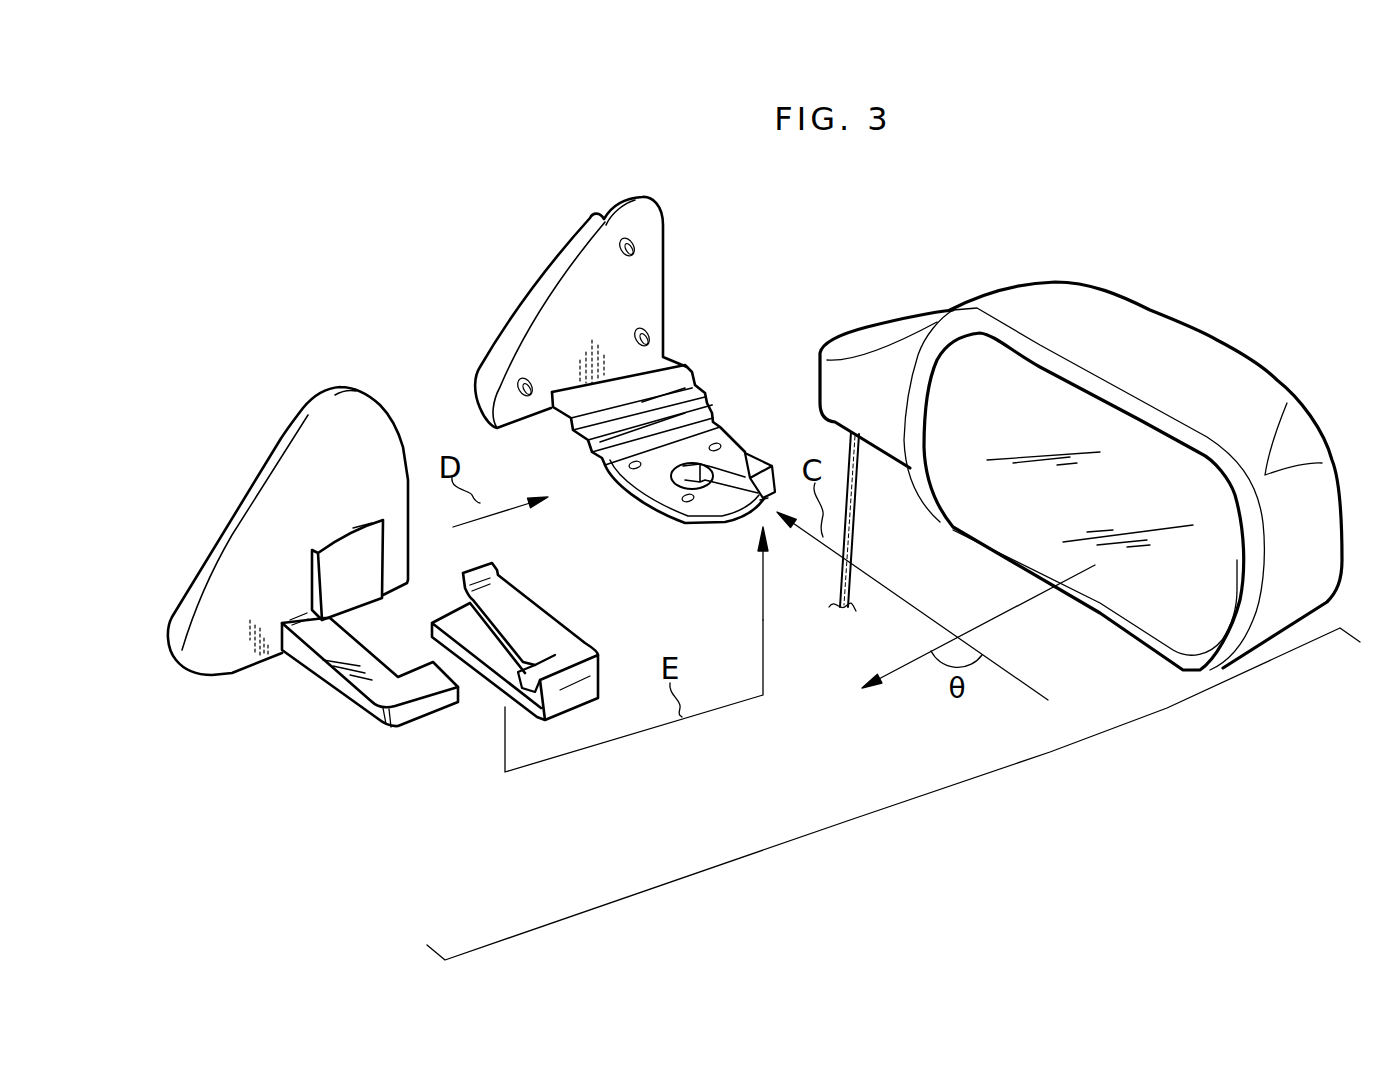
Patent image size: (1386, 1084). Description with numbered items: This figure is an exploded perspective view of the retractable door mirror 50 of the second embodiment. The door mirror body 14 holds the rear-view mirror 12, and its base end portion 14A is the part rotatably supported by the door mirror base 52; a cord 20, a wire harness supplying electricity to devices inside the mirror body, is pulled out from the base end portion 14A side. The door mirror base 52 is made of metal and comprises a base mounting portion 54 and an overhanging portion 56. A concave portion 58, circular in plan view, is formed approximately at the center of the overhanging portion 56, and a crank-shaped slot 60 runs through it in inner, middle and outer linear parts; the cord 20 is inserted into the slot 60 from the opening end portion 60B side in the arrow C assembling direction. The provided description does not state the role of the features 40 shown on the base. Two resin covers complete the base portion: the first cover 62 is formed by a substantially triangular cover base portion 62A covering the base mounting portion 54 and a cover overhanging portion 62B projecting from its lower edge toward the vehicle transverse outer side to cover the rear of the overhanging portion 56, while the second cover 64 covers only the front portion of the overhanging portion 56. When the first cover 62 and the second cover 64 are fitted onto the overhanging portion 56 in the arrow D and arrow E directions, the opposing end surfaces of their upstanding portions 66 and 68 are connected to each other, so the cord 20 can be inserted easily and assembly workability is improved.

The rear-view mirror 12 is at (1097, 590).
The door mirror body 14 is at (1168, 305).
The base end portion 14A is at (867, 343).
The cord 20 is at (852, 558).
The mounting holes 40 is at (717, 445).
The retractable door mirror 50 is at (1008, 246).
The door mirror base 52 is at (720, 265).
The base mounting portion 54 is at (663, 337).
The overhanging portion 56 is at (700, 390).
The concave portion 58 is at (683, 487).
The crank-shaped slot 60 is at (753, 460).
The opening end portion 60B is at (765, 503).
The first cover 62 is at (272, 782).
The cover base portion 62A is at (242, 643).
The cover overhanging portion 62B is at (367, 713).
The second cover 64 is at (588, 645).
The upstanding portion 66 is at (438, 705).
The upstanding portion 68 is at (572, 693).